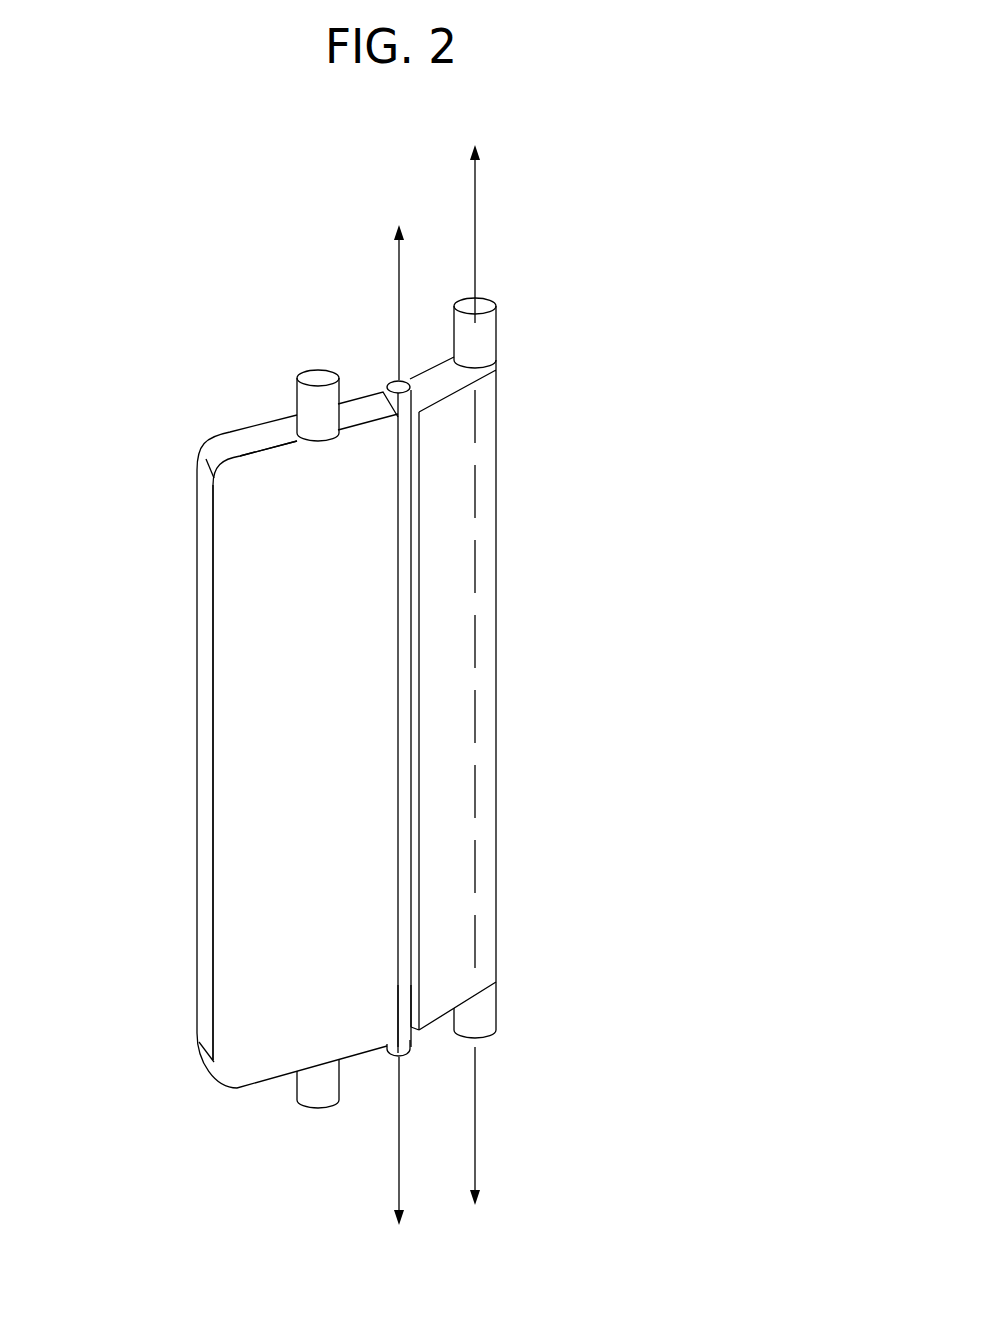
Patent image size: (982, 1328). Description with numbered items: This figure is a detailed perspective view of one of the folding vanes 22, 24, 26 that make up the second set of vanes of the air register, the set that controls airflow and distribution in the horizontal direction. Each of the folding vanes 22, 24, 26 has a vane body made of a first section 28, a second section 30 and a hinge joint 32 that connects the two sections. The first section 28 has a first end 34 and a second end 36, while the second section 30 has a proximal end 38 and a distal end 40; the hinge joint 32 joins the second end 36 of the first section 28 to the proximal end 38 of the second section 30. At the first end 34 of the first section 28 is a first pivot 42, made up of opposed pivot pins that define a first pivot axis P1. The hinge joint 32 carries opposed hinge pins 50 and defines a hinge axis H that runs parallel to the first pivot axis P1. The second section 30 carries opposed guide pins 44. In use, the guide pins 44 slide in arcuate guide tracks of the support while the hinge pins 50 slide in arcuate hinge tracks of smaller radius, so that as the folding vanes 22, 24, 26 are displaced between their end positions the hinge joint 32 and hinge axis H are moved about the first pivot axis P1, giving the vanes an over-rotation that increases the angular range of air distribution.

The folding vane 22 is at (436, 689).
The folding vane 24 is at (436, 689).
The folding vane 26 is at (640, 280).
The first section 28 is at (460, 680).
The second section 30 is at (240, 790).
The hinge joint 32 is at (398, 850).
The first end 34 is at (496, 558).
The second end 36 is at (420, 442).
The proximal end 38 is at (400, 988).
The distal end 40 is at (203, 962).
The first pivot 42 is at (494, 327).
The guide pins 44 is at (296, 403).
The hinge pins 50 is at (404, 379).
The hinge axis H is at (398, 305).
The first pivot axis P1 is at (480, 215).